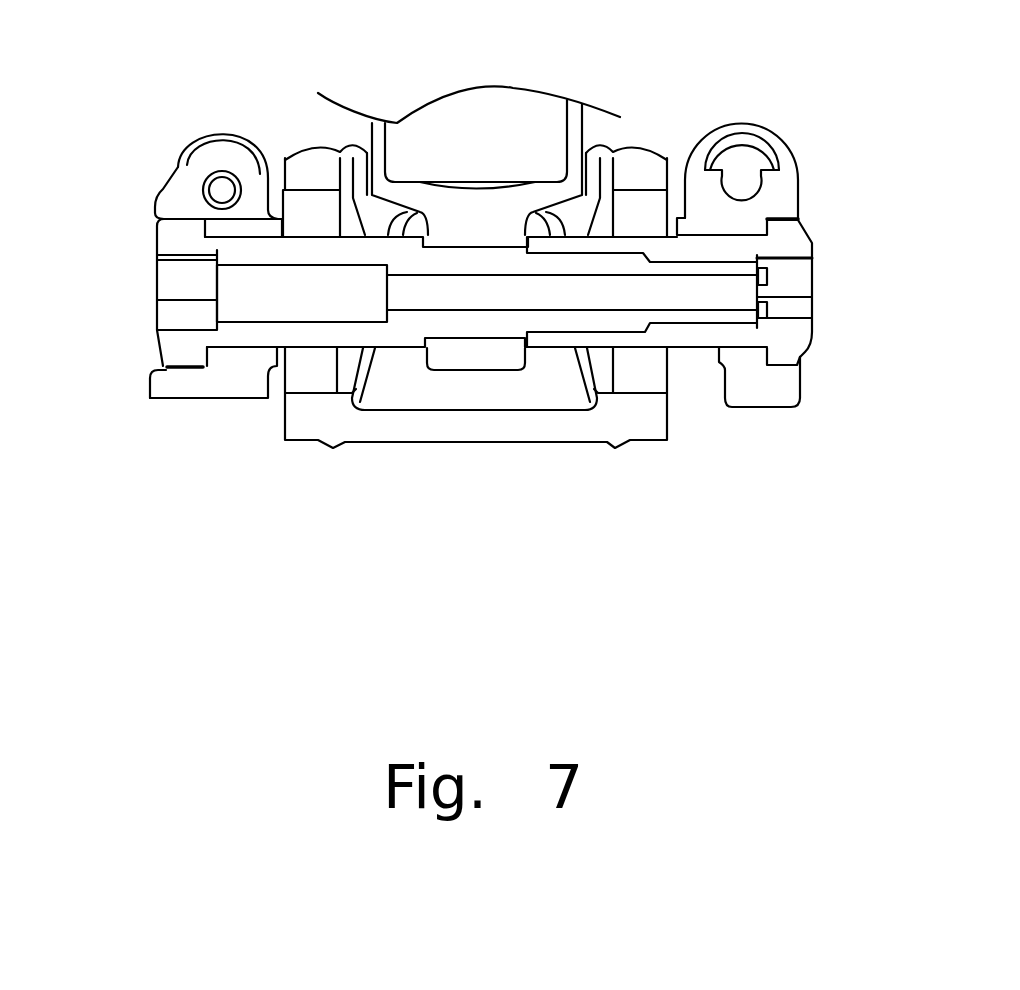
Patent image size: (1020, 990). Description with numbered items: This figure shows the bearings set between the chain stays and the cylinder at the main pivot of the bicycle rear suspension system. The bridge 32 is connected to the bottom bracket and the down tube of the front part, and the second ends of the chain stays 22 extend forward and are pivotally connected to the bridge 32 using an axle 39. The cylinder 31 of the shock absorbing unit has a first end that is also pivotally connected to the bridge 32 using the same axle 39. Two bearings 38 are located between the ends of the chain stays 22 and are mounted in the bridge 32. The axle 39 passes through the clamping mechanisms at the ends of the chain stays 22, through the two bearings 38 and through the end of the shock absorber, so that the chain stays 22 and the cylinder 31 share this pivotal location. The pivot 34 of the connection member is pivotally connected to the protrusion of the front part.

The chain stays 22 is at (227, 380).
The cylinder 31 is at (577, 125).
The bridge 32 is at (462, 428).
The pivot 34 is at (312, 218).
The bearings 38 is at (647, 377).
The axle 39 is at (178, 347).